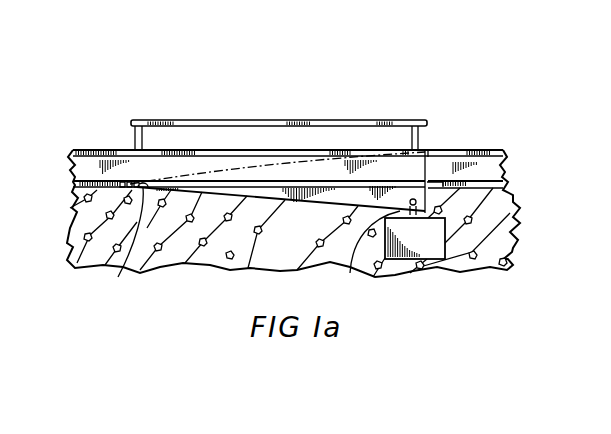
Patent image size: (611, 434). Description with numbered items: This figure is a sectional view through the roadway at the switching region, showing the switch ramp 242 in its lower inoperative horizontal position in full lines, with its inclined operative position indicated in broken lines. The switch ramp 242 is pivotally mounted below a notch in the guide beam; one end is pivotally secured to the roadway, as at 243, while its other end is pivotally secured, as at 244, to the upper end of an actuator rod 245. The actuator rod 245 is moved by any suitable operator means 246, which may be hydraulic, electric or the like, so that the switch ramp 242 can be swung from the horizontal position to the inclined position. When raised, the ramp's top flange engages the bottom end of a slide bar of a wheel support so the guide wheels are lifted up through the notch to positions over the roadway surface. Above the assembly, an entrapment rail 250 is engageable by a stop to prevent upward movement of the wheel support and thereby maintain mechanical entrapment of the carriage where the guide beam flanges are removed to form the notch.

The entrapment rail 250 is at (265, 119).
The switch ramp 242 is at (218, 266).
The pivot of switch ramp to roadway 243 is at (106, 244).
The pivot of switch ramp to actuator rod 244 is at (418, 202).
The actuator rod 245 is at (350, 273).
The operator means 246 is at (445, 245).